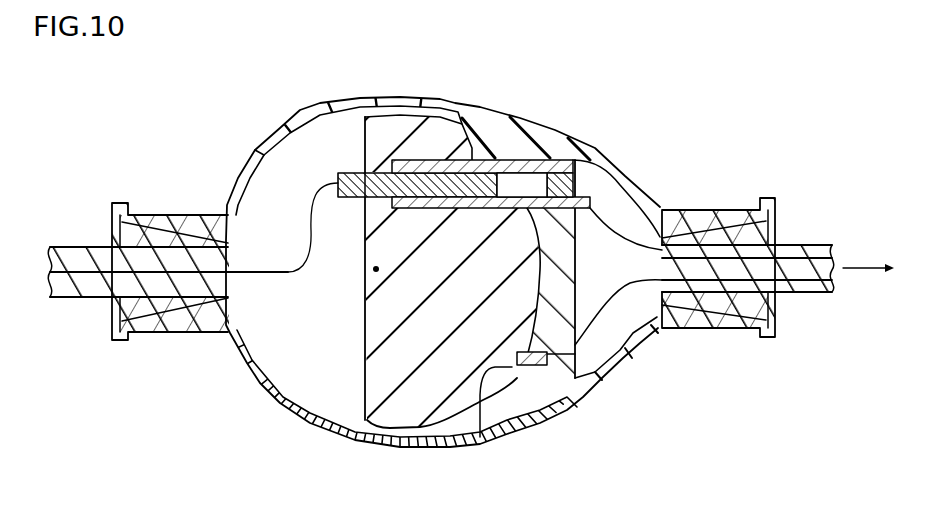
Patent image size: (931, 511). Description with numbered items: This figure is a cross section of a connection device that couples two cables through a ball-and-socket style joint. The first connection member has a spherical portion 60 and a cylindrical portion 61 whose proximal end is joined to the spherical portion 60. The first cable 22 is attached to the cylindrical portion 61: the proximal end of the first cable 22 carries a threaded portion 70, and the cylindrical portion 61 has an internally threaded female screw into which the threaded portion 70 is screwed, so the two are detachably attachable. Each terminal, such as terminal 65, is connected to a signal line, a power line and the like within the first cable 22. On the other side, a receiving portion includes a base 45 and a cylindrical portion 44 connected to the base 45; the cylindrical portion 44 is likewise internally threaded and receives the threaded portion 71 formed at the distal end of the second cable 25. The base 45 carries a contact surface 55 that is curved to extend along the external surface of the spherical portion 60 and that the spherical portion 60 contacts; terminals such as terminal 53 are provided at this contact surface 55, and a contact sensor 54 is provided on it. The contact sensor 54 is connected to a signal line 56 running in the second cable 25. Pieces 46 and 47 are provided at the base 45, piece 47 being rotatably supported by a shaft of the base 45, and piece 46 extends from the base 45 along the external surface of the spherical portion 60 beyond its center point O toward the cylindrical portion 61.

The spherical portion 60 is at (248, 101).
The cylindrical portion 61 is at (183, 220).
The first cable 22 is at (89, 284).
The threaded portion 70 is at (168, 303).
The terminal 65 is at (373, 183).
The piece 46 is at (374, 108).
The terminal 53 is at (507, 167).
The base 45 is at (571, 132).
The cylindrical portion 44 is at (692, 220).
The second cable 25 is at (800, 242).
The signal line 56 is at (812, 283).
The threaded portion 71 is at (713, 310).
The contact sensor 54 is at (525, 366).
The contact surface 55 is at (480, 437).
The piece 47 is at (437, 447).
The center point O is at (376, 272).